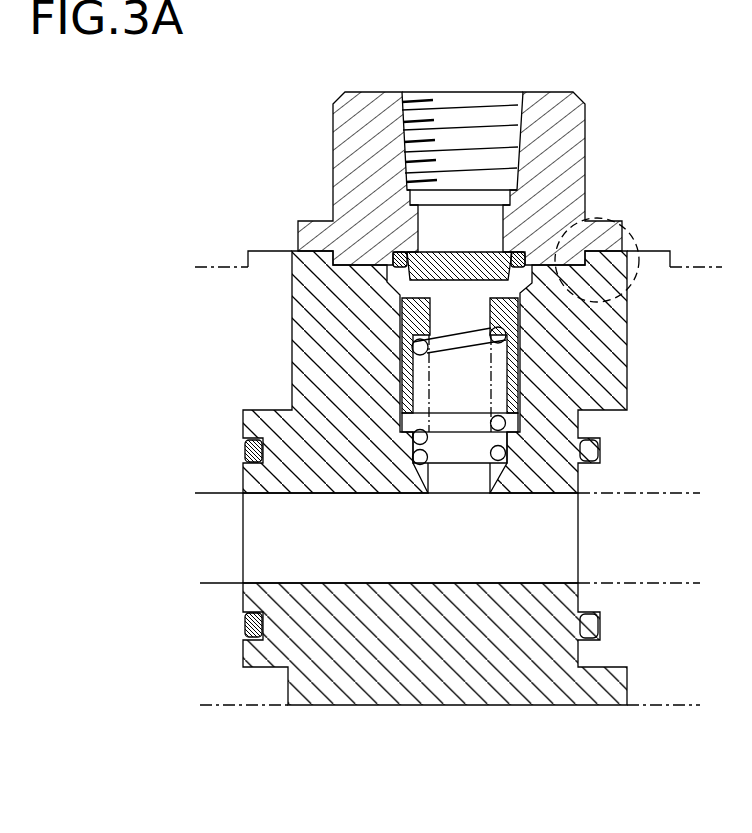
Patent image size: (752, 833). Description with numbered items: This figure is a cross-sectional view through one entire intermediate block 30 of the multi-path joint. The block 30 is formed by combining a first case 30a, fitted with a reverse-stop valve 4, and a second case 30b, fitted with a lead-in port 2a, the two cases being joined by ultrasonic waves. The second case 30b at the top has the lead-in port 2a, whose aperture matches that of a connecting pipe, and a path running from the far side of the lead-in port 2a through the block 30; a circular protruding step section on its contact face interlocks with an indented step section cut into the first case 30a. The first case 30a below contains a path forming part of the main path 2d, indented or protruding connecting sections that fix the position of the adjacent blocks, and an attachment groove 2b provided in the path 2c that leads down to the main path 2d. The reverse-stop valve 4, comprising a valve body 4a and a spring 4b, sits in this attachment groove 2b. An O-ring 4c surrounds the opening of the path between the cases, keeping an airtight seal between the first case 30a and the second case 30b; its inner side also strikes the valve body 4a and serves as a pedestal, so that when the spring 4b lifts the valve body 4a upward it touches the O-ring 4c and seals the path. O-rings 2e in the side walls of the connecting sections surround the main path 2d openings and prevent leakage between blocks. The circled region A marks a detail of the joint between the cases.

The lead-in port 2a is at (433, 110).
The attachment groove 2b is at (517, 362).
The path 2c is at (432, 476).
The main path 2d is at (562, 537).
The O-ring 2e is at (245, 452).
The reverse-stop valve 4 is at (400, 378).
The valve body 4a is at (473, 251).
The spring 4b is at (505, 422).
The O-ring 4c is at (393, 252).
The intermediate block 30 is at (602, 160).
The first case 30a is at (480, 683).
The second case 30b is at (548, 100).
The detail region A is at (632, 298).